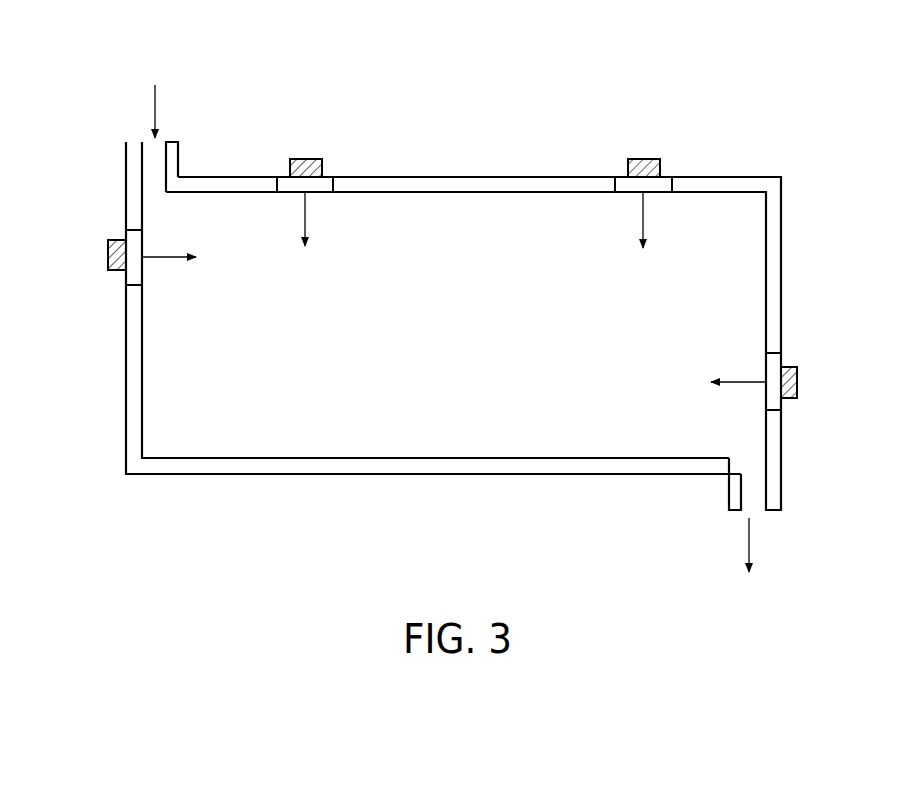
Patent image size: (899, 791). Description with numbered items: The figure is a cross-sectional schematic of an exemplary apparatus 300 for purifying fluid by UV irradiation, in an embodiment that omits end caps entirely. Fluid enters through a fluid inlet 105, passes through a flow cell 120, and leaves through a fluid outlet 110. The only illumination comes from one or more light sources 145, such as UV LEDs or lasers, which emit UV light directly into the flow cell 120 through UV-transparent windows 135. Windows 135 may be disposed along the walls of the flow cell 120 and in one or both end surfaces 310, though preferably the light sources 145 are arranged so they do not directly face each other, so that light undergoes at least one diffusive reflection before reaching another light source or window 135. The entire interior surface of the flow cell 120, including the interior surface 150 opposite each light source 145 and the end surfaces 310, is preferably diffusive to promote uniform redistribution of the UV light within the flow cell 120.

The purification apparatus 300 is at (740, 80).
The fluid inlet 105 is at (180, 126).
The fluid outlet 110 is at (723, 528).
The flow cell 120 is at (267, 417).
The interior surface 150 is at (497, 455).
The UV-transparent window 135 is at (125, 231).
The light source 145 is at (107, 251).
The end surface 310 is at (149, 387).